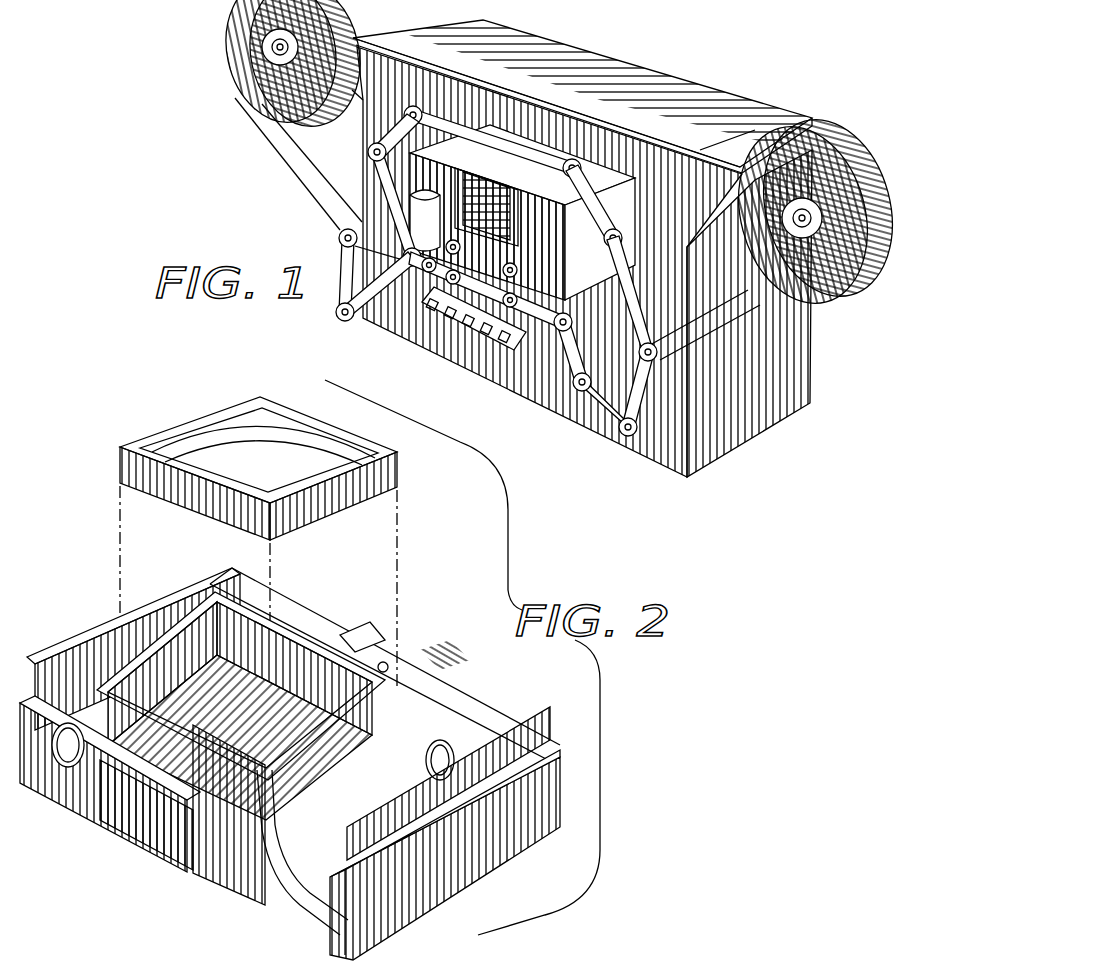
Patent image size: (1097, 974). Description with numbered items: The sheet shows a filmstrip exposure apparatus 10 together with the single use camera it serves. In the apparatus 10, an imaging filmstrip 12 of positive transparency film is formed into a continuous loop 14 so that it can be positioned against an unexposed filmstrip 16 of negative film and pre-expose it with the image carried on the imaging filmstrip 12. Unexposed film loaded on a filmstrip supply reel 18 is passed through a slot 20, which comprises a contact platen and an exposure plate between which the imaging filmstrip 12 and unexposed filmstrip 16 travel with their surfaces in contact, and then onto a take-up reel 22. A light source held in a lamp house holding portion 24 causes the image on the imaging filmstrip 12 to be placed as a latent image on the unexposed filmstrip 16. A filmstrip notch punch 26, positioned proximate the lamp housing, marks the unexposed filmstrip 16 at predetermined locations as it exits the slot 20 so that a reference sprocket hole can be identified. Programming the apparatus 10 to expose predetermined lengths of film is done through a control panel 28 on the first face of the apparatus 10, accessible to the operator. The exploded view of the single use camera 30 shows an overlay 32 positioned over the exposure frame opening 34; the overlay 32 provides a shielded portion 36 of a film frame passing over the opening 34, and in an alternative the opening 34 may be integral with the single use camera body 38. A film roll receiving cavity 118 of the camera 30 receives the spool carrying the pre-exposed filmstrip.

In FIG. 1, the apparatus 10 is at (656, 56).
In FIG. 1, the imaging filmstrip 12 is at (617, 200).
In FIG. 1, the continuous loop 14 is at (512, 126).
In FIG. 1, the unexposed filmstrip 16 is at (612, 412).
In FIG. 1, the filmstrip supply reel 18 is at (836, 270).
In FIG. 1, the slot 20 is at (512, 265).
In FIG. 1, the take-up reel 22 is at (246, 66).
In FIG. 1, the lamp house holding portion 24 is at (417, 183).
In FIG. 1, the filmstrip notch punch 26 is at (400, 213).
In FIG. 1, the control panel 28 is at (450, 336).
In FIG. 2, the single use camera 30 is at (290, 764).
In FIG. 2, the overlay 32 is at (385, 468).
In FIG. 2, the exposure frame opening 34 is at (360, 735).
In FIG. 2, the shielded portion 36 is at (262, 415).
In FIG. 2, the single use camera body 38 is at (167, 757).
In FIG. 2, the film roll receiving cavity 118 is at (100, 632).